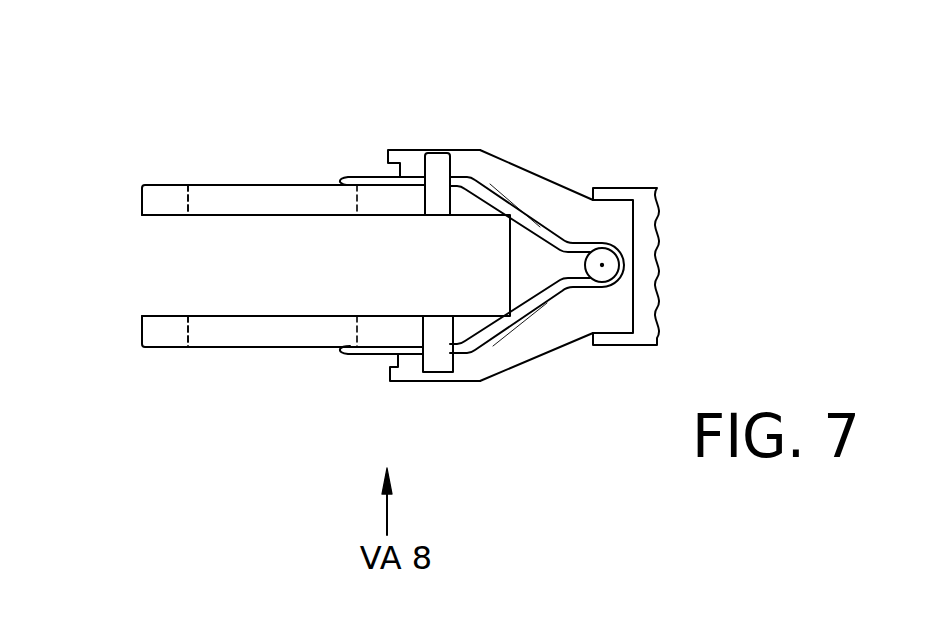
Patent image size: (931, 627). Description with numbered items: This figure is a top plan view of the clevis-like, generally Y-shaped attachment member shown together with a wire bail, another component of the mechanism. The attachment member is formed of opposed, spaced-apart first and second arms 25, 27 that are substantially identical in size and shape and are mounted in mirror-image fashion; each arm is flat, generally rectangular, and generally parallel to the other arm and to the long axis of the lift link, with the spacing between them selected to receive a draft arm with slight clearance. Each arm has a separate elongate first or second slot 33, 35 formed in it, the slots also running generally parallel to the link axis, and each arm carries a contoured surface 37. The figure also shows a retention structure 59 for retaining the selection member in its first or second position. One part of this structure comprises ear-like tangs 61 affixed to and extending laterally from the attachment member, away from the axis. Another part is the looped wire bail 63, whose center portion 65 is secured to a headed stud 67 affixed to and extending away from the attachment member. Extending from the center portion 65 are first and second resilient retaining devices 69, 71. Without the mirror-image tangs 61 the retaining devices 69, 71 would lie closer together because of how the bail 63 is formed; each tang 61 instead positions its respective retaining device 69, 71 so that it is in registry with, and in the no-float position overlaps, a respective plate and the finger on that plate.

The first arm 25 is at (140, 215).
The second arm 27 is at (140, 347).
The first slot 33 is at (190, 197).
The second slot 35 is at (188, 333).
The contoured surface 37 is at (388, 160).
The retention structure 59 is at (512, 116).
The tang 61 is at (445, 165).
The wire bail 63 is at (523, 207).
The center portion 65 is at (625, 273).
The headed stud 67 is at (603, 262).
The first resilient retaining device 69 is at (341, 178).
The second resilient retaining device 71 is at (340, 348).